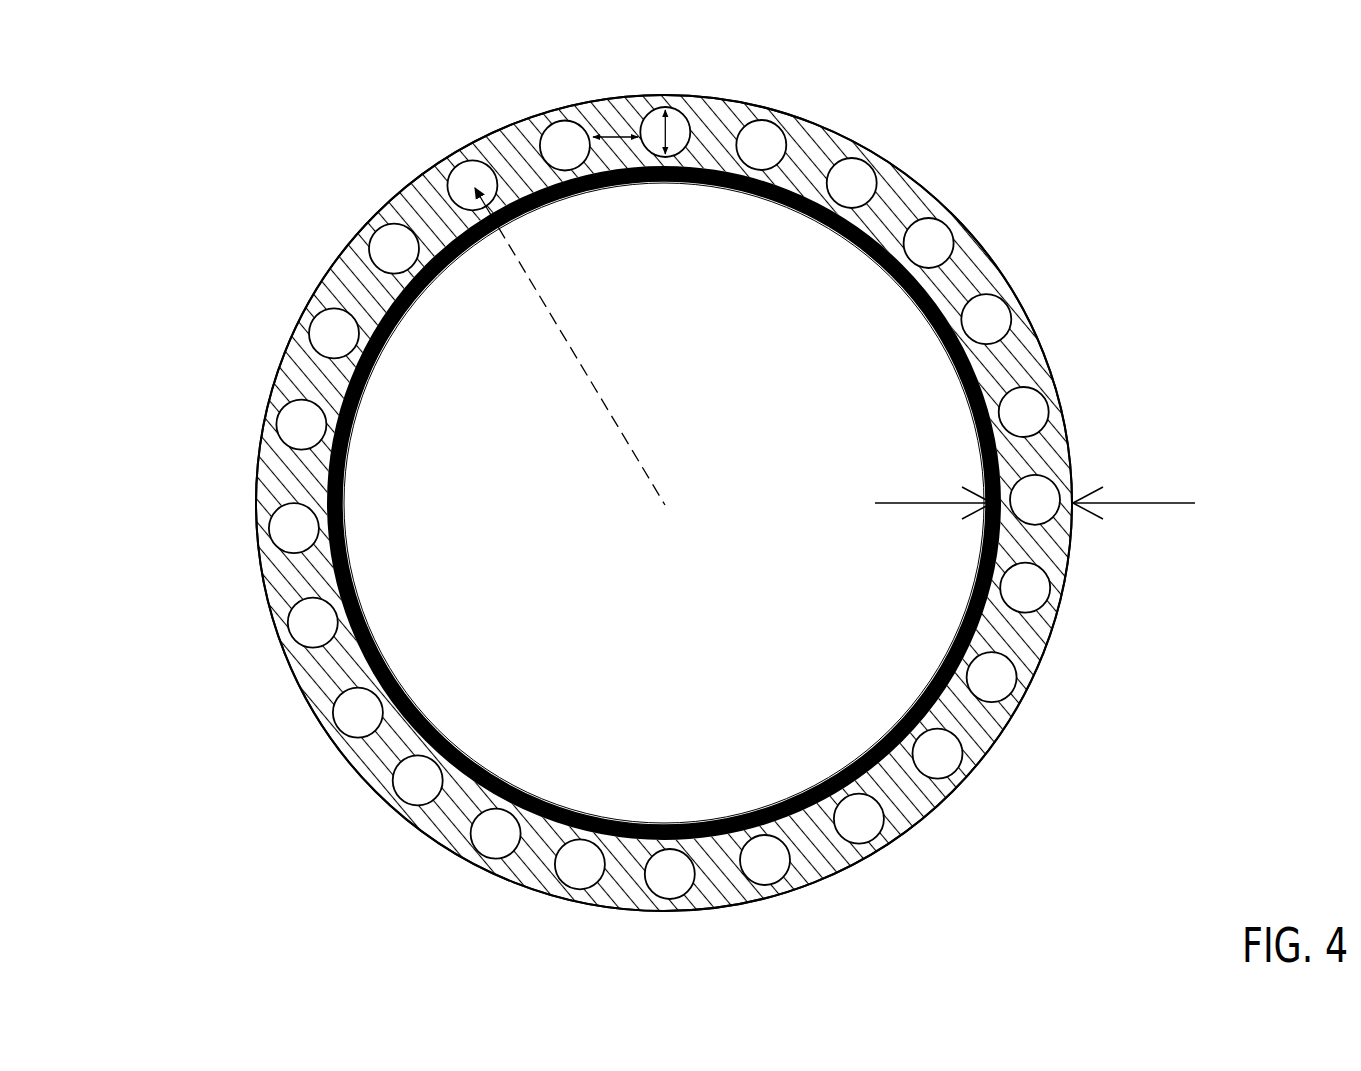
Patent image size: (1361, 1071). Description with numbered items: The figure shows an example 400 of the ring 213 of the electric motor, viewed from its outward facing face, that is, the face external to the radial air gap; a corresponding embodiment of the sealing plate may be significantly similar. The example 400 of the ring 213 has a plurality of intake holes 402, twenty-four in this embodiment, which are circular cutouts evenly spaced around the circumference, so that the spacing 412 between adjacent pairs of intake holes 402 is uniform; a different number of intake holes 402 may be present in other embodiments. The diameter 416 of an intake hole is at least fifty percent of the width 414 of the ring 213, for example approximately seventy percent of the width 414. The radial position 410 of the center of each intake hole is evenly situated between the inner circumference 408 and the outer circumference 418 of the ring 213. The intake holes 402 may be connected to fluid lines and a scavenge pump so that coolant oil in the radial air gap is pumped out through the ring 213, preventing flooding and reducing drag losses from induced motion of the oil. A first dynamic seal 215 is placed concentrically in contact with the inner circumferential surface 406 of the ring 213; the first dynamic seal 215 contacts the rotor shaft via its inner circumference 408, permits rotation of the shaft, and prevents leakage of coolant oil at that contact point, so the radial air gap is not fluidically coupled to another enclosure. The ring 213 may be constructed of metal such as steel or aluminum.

The example of the ring 400 is at (641, 476).
The ring 213 is at (875, 157).
The plurality of intake holes 402 is at (981, 287).
The inner circumferential surface 406 is at (368, 670).
The inner circumference 408 is at (402, 690).
The first dynamic seal 215 is at (453, 727).
The radial position 410 is at (636, 457).
The spacing 412 is at (613, 133).
The width of the ring 414 is at (1133, 502).
The diameter 416 is at (686, 130).
The outer circumference 418 is at (257, 550).